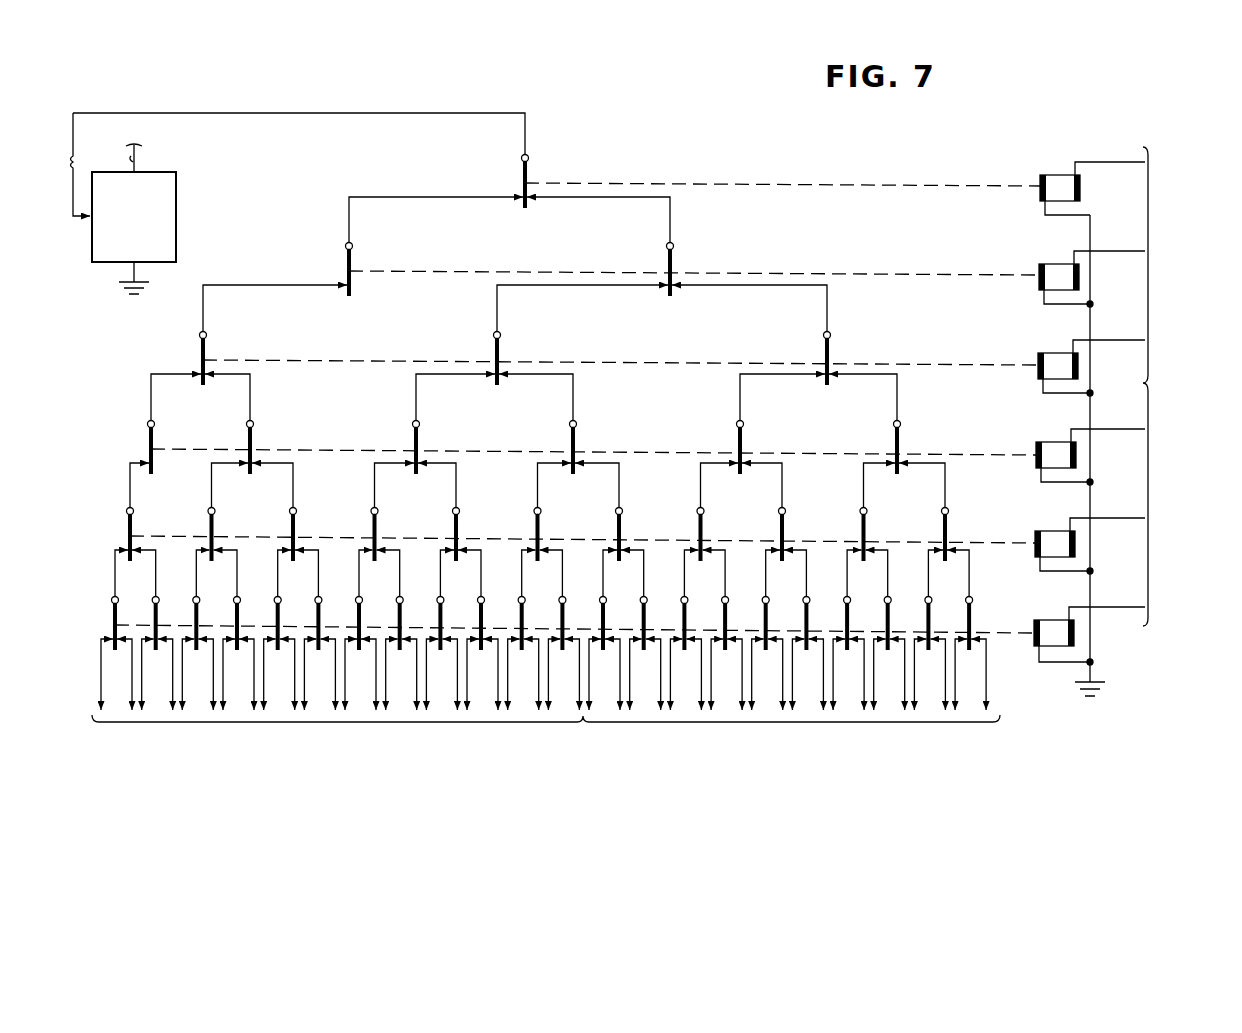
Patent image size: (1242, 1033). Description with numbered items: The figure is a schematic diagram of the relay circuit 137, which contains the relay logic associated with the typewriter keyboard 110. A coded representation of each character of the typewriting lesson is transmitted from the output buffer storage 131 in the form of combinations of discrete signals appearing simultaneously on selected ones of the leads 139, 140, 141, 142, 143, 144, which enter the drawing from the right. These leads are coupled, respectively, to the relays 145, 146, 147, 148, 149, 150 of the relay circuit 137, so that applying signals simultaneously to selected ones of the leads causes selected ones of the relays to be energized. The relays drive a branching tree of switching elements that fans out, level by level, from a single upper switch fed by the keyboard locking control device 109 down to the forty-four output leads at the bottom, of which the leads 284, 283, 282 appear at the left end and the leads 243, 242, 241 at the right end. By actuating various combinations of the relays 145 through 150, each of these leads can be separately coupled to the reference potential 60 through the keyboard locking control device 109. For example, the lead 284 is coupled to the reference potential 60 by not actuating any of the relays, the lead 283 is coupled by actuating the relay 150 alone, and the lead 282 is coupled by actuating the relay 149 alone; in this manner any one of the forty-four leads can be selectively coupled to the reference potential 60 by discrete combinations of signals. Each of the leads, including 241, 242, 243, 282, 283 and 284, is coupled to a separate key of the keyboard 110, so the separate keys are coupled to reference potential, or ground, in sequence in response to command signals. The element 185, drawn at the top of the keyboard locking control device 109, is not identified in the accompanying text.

The keyboard locking control device 109 is at (172, 251).
The control input line 185 is at (140, 160).
The reference potential 60 is at (142, 283).
The relay circuit 137 is at (712, 148).
The lead 139 is at (1113, 162).
The lead 140 is at (1130, 251).
The lead 141 is at (1130, 340).
The lead 142 is at (1130, 429).
The lead 143 is at (1128, 518).
The lead 144 is at (1128, 607).
The relay 145 is at (1043, 197).
The relay 146 is at (1042, 286).
The relay 147 is at (1041, 375).
The relay 148 is at (1039, 464).
The relay 149 is at (1038, 553).
The relay 150 is at (1036, 620).
The output buffer storage 131 is at (1188, 386).
The typewriter keyboard 110 is at (546, 746).
The lead 284 is at (97, 670).
The lead 283 is at (134, 668).
The lead 282 is at (143, 668).
The lead 243 is at (947, 672).
The lead 242 is at (955, 672).
The lead 241 is at (988, 672).